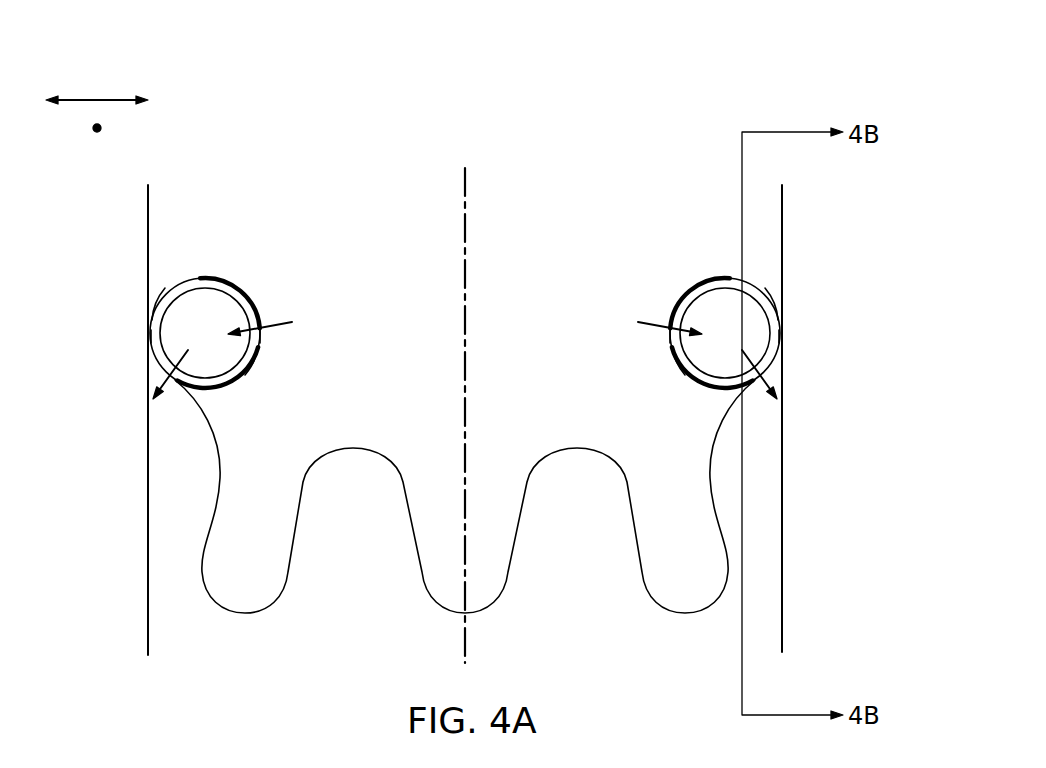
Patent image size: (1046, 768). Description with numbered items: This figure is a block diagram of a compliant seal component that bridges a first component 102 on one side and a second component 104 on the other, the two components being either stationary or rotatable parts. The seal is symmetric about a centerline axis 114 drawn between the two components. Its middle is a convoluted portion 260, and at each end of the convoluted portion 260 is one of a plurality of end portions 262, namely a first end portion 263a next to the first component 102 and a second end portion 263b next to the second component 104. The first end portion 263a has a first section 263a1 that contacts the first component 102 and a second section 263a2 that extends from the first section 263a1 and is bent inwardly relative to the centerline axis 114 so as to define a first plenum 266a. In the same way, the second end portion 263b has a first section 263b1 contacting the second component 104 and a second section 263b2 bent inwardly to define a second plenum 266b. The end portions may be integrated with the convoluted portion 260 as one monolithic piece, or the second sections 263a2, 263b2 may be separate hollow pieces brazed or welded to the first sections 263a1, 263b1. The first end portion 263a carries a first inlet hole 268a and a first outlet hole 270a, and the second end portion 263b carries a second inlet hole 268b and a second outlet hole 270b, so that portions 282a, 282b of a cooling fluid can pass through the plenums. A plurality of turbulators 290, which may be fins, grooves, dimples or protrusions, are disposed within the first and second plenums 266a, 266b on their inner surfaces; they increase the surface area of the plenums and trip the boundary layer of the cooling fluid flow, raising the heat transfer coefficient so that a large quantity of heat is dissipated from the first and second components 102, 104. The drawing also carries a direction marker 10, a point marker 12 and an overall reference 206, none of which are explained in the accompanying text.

The longitudinal axis direction 10 is at (98, 100).
The transverse axis point 12 is at (102, 128).
The fluid seal 206 is at (738, 36).
The first component 102 is at (147, 487).
The second component 104 is at (783, 487).
The centerline axis 114 is at (467, 242).
The convoluted portion 260 is at (422, 604).
The plurality of end portions 262 is at (258, 282).
The first end portion 263a is at (180, 277).
The first section 263a1 is at (165, 288).
The second section 263a2 is at (245, 375).
The second end portion 263b is at (750, 277).
The first section 263b1 is at (765, 288).
The second section 263b2 is at (685, 375).
The first plenum 266a is at (233, 327).
The second plenum 266b is at (722, 350).
The first inlet hole 268a is at (260, 322).
The second inlet hole 268b is at (670, 322).
The first outlet hole 270a is at (177, 382).
The second outlet hole 270b is at (753, 382).
The portion of cooling fluid 282a is at (151, 343).
The portion of cooling fluid 282b is at (668, 333).
The plurality of turbulators 290 is at (163, 312).